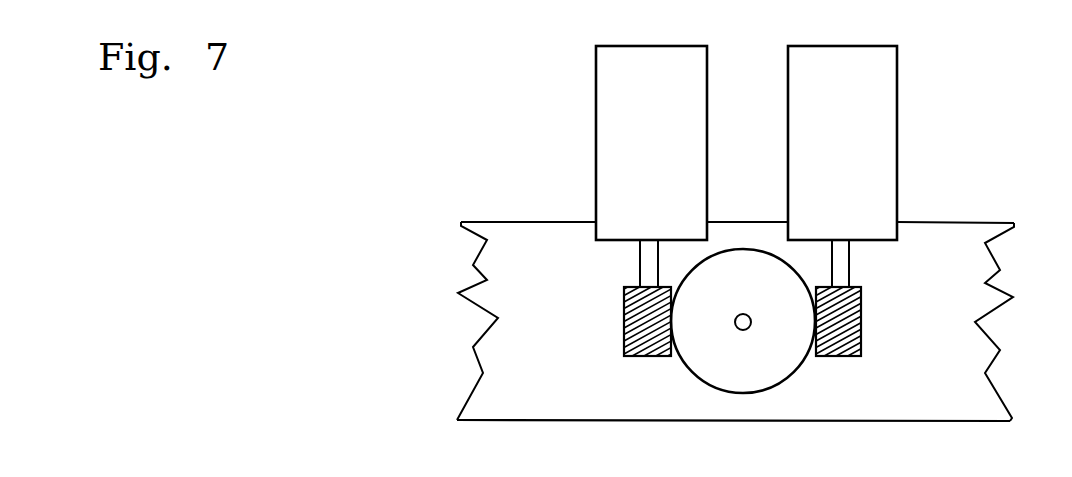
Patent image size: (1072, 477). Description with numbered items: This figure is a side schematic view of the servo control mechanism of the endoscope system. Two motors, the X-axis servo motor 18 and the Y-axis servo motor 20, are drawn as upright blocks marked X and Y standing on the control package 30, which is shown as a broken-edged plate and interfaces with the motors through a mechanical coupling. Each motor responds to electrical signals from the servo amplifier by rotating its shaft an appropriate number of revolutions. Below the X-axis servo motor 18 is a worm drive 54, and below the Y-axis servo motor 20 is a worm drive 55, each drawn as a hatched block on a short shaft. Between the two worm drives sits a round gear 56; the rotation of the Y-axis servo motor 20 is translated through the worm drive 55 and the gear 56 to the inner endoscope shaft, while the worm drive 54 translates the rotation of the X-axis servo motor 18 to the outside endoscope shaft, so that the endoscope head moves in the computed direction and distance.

The X-axis servo motor 18 is at (596, 115).
The Y-axis servo motor 20 is at (897, 110).
The control package 30 is at (930, 428).
The worm drive 54 is at (624, 340).
The worm drive 55 is at (861, 347).
The gear 56 is at (688, 375).